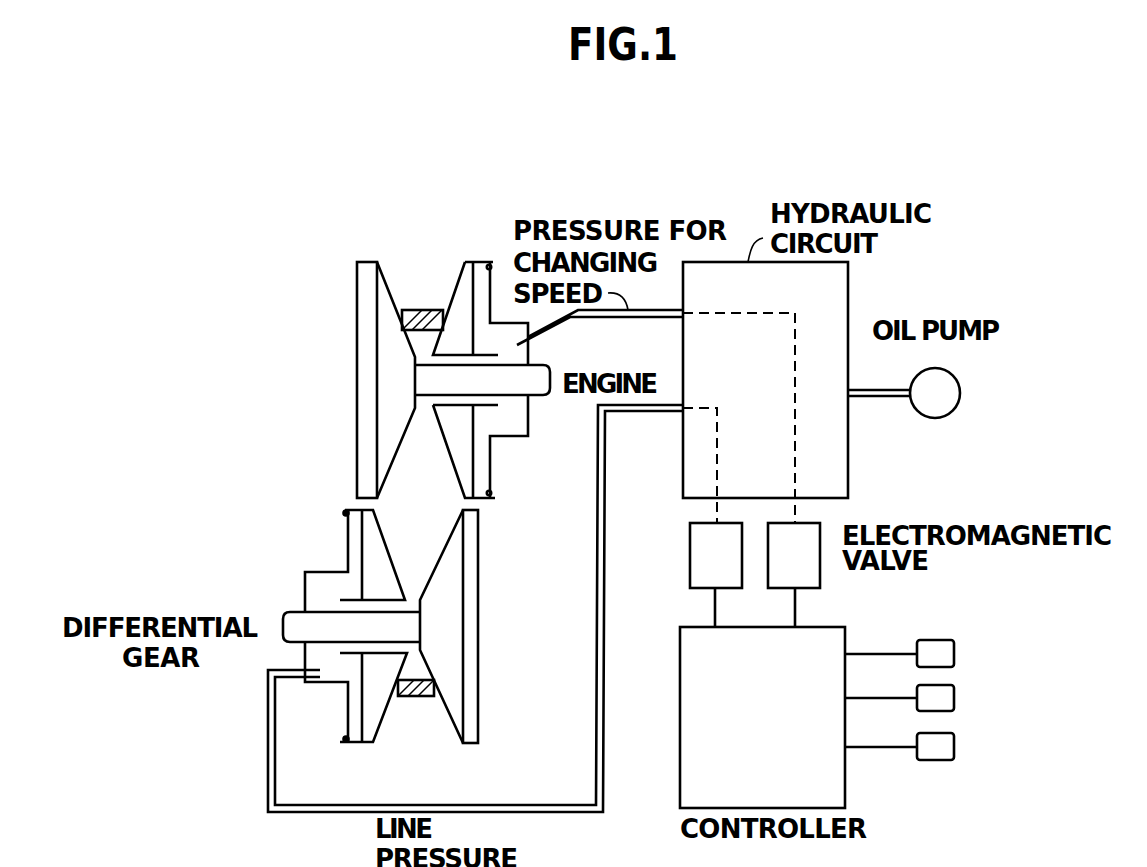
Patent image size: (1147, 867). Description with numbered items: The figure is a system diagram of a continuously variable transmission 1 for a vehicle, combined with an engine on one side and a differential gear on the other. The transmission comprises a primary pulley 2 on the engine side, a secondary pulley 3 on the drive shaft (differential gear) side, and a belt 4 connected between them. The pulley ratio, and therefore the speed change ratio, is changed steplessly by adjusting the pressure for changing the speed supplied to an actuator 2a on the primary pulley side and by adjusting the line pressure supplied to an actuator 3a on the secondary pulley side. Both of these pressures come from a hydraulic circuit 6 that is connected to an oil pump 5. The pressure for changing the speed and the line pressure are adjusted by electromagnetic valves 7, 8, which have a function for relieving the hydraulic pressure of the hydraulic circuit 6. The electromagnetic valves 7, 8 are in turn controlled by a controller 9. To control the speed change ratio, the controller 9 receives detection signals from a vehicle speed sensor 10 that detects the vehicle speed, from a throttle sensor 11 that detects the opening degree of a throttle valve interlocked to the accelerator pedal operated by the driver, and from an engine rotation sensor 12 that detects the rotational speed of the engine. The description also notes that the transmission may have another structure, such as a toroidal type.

The continuously variable transmission 1 is at (327, 395).
The primary pulley 2 is at (453, 287).
The actuator 2a is at (500, 333).
The secondary pulley 3 is at (382, 717).
The actuator 3a is at (340, 672).
The belt 4 is at (417, 483).
The oil pump 5 is at (940, 419).
The hydraulic circuit 6 is at (852, 282).
The electromagnetic valve 7 is at (820, 577).
The electromagnetic valve 8 is at (690, 560).
The controller 9 is at (680, 784).
The vehicle speed sensor 10 is at (955, 655).
The throttle sensor 11 is at (955, 699).
The engine rotation sensor 12 is at (955, 748).